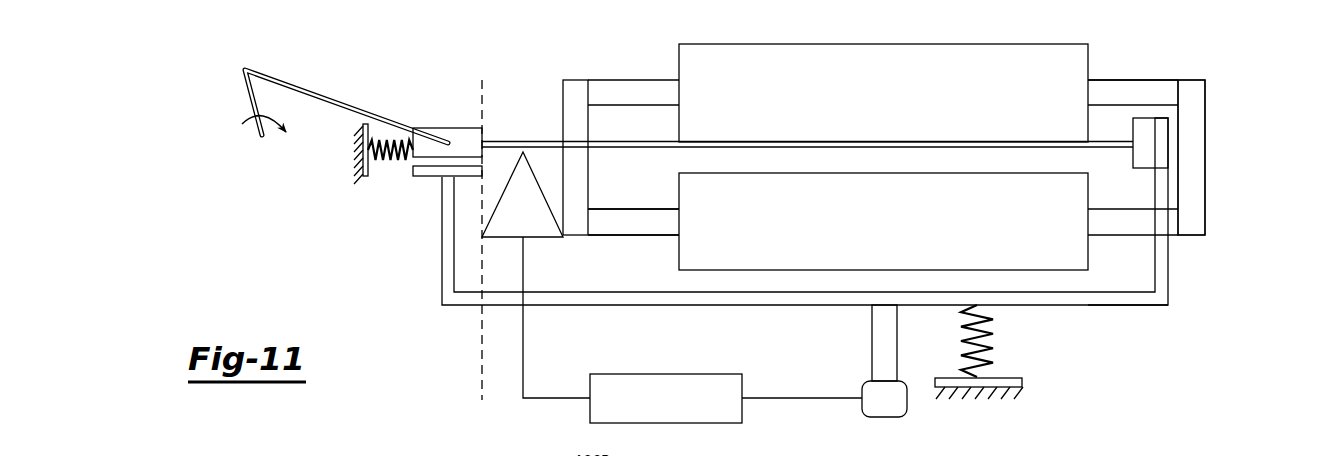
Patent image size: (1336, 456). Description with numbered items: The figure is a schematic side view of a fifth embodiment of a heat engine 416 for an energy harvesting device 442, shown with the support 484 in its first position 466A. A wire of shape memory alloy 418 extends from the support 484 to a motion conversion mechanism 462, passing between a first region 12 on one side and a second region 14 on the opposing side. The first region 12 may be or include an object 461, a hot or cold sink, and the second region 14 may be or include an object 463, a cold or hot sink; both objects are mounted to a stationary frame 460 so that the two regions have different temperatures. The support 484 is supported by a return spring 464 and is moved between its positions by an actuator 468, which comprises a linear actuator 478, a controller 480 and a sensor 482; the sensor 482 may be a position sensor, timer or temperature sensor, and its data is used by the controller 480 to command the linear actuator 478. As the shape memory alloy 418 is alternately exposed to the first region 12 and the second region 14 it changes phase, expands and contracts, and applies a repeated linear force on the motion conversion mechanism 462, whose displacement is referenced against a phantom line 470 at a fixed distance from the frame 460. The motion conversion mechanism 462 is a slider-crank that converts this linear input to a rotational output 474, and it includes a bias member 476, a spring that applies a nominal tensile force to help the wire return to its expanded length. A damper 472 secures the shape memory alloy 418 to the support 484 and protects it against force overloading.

The first region 12 is at (893, 105).
The second region 14 is at (893, 232).
The heat engine 416 is at (456, 78).
The shape memory alloy 418 is at (538, 140).
The energy harvesting device 442 is at (201, 161).
The frame 460 is at (1195, 204).
The object 461 is at (1088, 57).
The motion conversion mechanism 462 is at (448, 128).
The object 463 is at (677, 253).
The return spring 464 is at (983, 353).
The first position 466A is at (650, 68).
The actuator 468 is at (419, 296).
The phantom line 470 is at (482, 371).
The damper 472 is at (1148, 139).
The output 474 is at (302, 90).
The bias member 476 is at (382, 162).
The linear actuator 478 is at (883, 417).
The controller 480 is at (712, 374).
The sensor 482 is at (541, 239).
The support 484 is at (1118, 305).